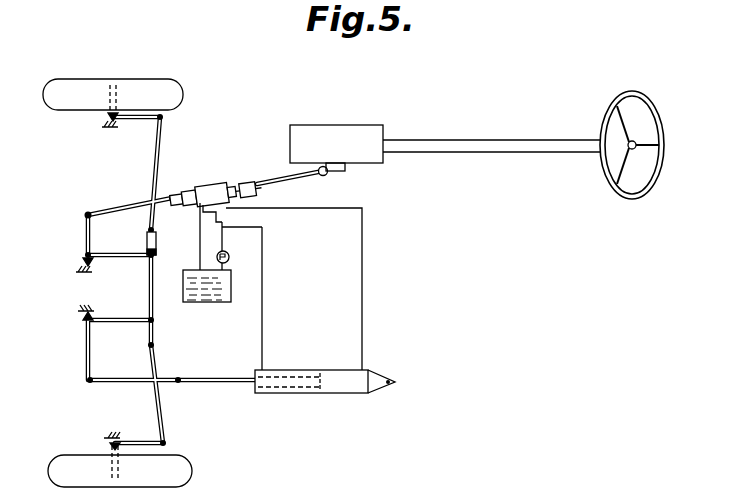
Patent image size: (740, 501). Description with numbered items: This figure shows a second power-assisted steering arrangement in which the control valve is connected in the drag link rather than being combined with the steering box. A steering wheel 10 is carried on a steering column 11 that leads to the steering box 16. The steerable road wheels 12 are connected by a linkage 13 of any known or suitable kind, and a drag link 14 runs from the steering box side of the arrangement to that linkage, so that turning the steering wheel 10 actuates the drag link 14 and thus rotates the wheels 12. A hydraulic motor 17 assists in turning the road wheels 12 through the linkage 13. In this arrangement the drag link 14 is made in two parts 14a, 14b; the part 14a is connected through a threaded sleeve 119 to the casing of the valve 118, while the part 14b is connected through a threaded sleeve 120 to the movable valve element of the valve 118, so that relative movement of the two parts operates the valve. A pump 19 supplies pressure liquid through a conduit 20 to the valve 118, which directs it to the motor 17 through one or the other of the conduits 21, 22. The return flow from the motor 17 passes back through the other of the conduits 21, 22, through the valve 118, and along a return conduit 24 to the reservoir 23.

The steering wheel 10 is at (632, 201).
The steering column 11 is at (502, 147).
The steerable wheels 12 is at (120, 78).
The linkage 13 is at (150, 366).
The drag link 14 is at (279, 189).
The drag link part 14a is at (128, 207).
The drag link part 14b is at (272, 178).
The steering box 16 is at (335, 125).
The hydraulic motor 17 is at (290, 395).
The pump 19 is at (231, 259).
The conduit 20 is at (225, 243).
The conduit 21 is at (262, 327).
The conduit 22 is at (362, 320).
The reservoir 23 is at (197, 302).
The return conduit 24 is at (198, 226).
The valve 118 is at (197, 185).
The threaded sleeve 119 is at (162, 197).
The threaded sleeve 120 is at (238, 181).